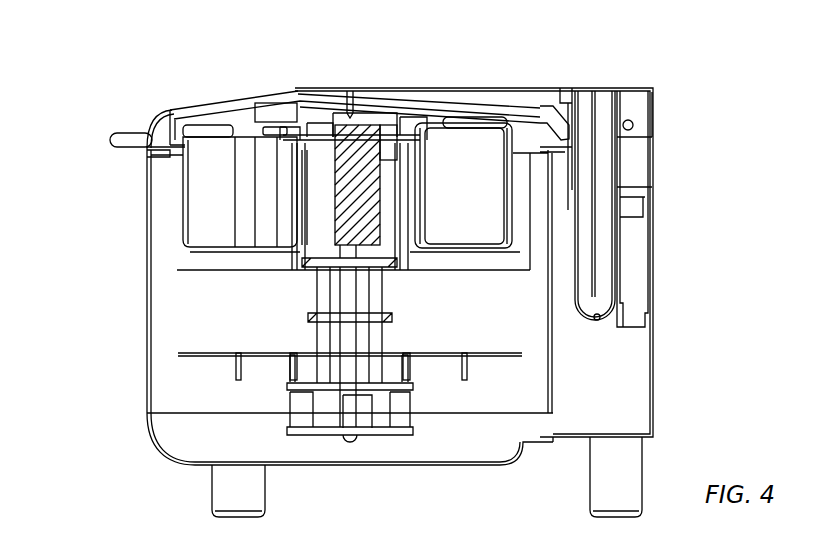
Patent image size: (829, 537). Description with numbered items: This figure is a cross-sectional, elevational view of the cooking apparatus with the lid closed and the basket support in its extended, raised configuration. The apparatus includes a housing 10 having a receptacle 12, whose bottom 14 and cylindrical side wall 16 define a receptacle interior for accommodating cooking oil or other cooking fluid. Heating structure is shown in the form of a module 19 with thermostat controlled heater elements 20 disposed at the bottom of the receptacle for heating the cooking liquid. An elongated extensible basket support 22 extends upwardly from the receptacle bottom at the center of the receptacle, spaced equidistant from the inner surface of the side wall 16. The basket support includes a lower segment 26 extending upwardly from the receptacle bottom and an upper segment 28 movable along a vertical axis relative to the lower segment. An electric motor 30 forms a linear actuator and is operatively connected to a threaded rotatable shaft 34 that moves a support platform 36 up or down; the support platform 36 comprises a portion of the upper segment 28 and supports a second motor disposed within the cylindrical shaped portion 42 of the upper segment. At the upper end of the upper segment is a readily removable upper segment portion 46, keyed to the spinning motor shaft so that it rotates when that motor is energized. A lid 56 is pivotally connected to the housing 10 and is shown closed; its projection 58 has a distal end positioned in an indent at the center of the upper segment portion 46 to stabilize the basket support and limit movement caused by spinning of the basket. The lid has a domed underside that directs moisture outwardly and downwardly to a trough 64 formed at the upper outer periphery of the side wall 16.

The housing 10 is at (635, 370).
The receptacle 12 is at (167, 461).
The bottom 14 is at (471, 467).
The cylindrical side wall 16 is at (147, 370).
The module 19 is at (173, 288).
The thermostat controlled heater elements 20 is at (265, 367).
The elongated extensible basket support 22 is at (407, 307).
The lower segment 26 is at (295, 309).
The upper segment 28 is at (402, 178).
The electric motor 30 is at (353, 417).
The threaded rotatable shaft 34 is at (339, 228).
The support platform 36 is at (348, 248).
The cylindrical shaped portion 42 is at (313, 232).
The upper segment portion 46 is at (318, 172).
The lid 56 is at (210, 103).
The projection 58 is at (350, 112).
The trough 64 is at (163, 147).